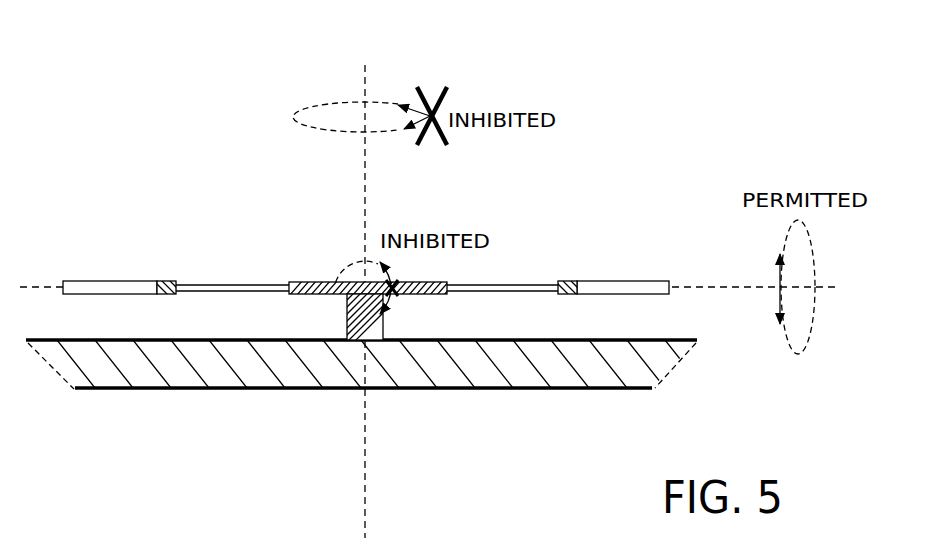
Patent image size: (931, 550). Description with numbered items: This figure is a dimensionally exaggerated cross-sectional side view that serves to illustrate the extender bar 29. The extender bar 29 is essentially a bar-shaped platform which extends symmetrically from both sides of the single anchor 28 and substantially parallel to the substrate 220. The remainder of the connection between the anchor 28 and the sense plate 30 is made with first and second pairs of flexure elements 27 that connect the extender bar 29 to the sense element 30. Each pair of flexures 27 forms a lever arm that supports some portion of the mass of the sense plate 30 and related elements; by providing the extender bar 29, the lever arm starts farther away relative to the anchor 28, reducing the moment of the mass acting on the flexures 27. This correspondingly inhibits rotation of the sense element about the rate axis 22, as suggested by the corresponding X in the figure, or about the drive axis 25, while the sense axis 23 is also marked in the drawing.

The drive axis 25 is at (384, 285).
The rate axis 22 is at (363, 287).
The sense axis 23 is at (460, 289).
The flexure elements 27 is at (206, 286).
The anchor 28 is at (372, 316).
The extender bar 29 is at (405, 284).
The sense plate 30 is at (101, 287).
The substrate 220 is at (515, 384).